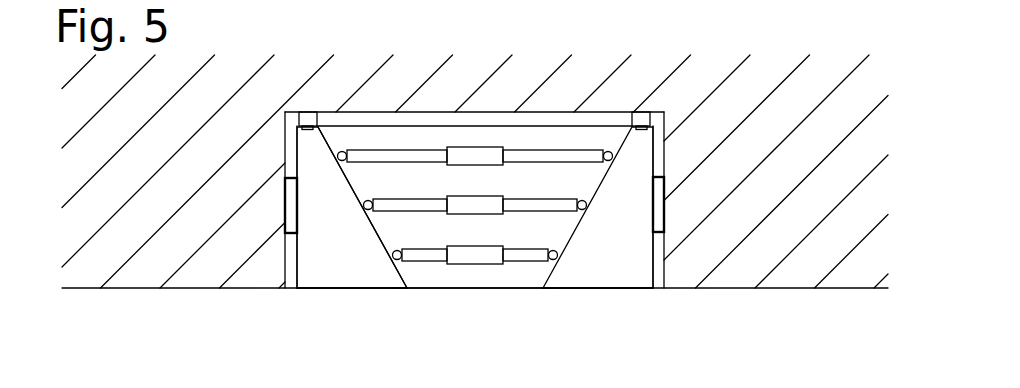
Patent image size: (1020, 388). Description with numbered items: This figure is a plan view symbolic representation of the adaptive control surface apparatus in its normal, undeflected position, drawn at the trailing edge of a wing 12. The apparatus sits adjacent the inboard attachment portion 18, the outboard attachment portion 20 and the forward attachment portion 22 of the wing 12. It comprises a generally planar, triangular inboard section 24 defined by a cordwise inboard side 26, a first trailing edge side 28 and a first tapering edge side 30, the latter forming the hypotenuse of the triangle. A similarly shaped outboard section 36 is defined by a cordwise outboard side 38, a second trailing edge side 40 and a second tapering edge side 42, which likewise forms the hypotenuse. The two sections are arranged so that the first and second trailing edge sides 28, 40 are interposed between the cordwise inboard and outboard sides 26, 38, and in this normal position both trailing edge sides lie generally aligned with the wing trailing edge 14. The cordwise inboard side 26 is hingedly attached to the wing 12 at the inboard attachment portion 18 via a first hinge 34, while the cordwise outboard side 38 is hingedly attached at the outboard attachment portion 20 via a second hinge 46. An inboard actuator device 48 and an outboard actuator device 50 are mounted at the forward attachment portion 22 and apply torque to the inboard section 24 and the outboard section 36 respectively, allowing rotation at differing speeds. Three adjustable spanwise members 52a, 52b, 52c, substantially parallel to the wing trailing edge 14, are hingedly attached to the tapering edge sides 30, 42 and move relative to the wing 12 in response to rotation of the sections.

The wing 12 is at (191, 277).
The wing trailing edge 14 is at (135, 292).
The inboard attachment portion 18 is at (660, 249).
The outboard attachment portion 20 is at (298, 270).
The forward attachment portion 22 is at (481, 114).
The inboard section 24 is at (617, 273).
The cordwise inboard side 26 is at (657, 278).
The first trailing edge side 28 is at (562, 289).
The first tapering edge side 30 is at (541, 274).
The first hinge 34 is at (662, 200).
The outboard section 36 is at (353, 273).
The cordwise outboard side 38 is at (296, 283).
The second trailing edge side 40 is at (385, 290).
The second tapering edge side 42 is at (400, 275).
The second hinge 46 is at (287, 203).
The inboard actuator device 48 is at (648, 112).
The outboard actuator device 50 is at (309, 112).
The spanwise member 52a is at (432, 255).
The spanwise member 52b is at (435, 205).
The spanwise member 52c is at (422, 155).